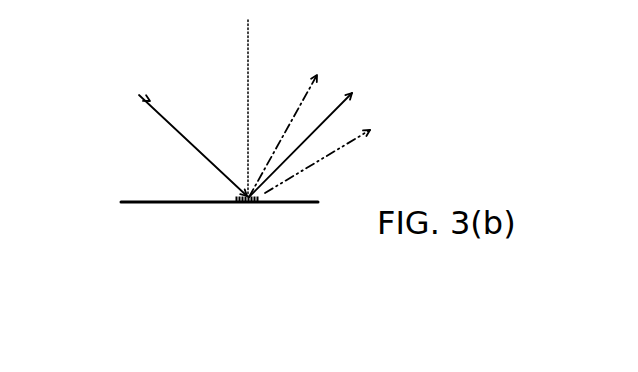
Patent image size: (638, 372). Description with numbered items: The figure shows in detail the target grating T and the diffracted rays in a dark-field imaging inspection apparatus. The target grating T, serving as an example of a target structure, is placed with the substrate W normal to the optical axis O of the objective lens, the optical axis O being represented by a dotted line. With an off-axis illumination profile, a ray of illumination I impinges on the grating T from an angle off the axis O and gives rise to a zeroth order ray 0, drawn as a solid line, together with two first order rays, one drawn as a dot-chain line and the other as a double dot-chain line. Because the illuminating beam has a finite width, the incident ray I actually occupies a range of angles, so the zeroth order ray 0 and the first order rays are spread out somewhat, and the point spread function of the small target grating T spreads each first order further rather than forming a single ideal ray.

The substrate W is at (157, 201).
The target grating T is at (284, 189).
The optical axis O is at (247, 98).
The ray of illumination I is at (188, 134).
The zeroth order ray 0 is at (309, 136).